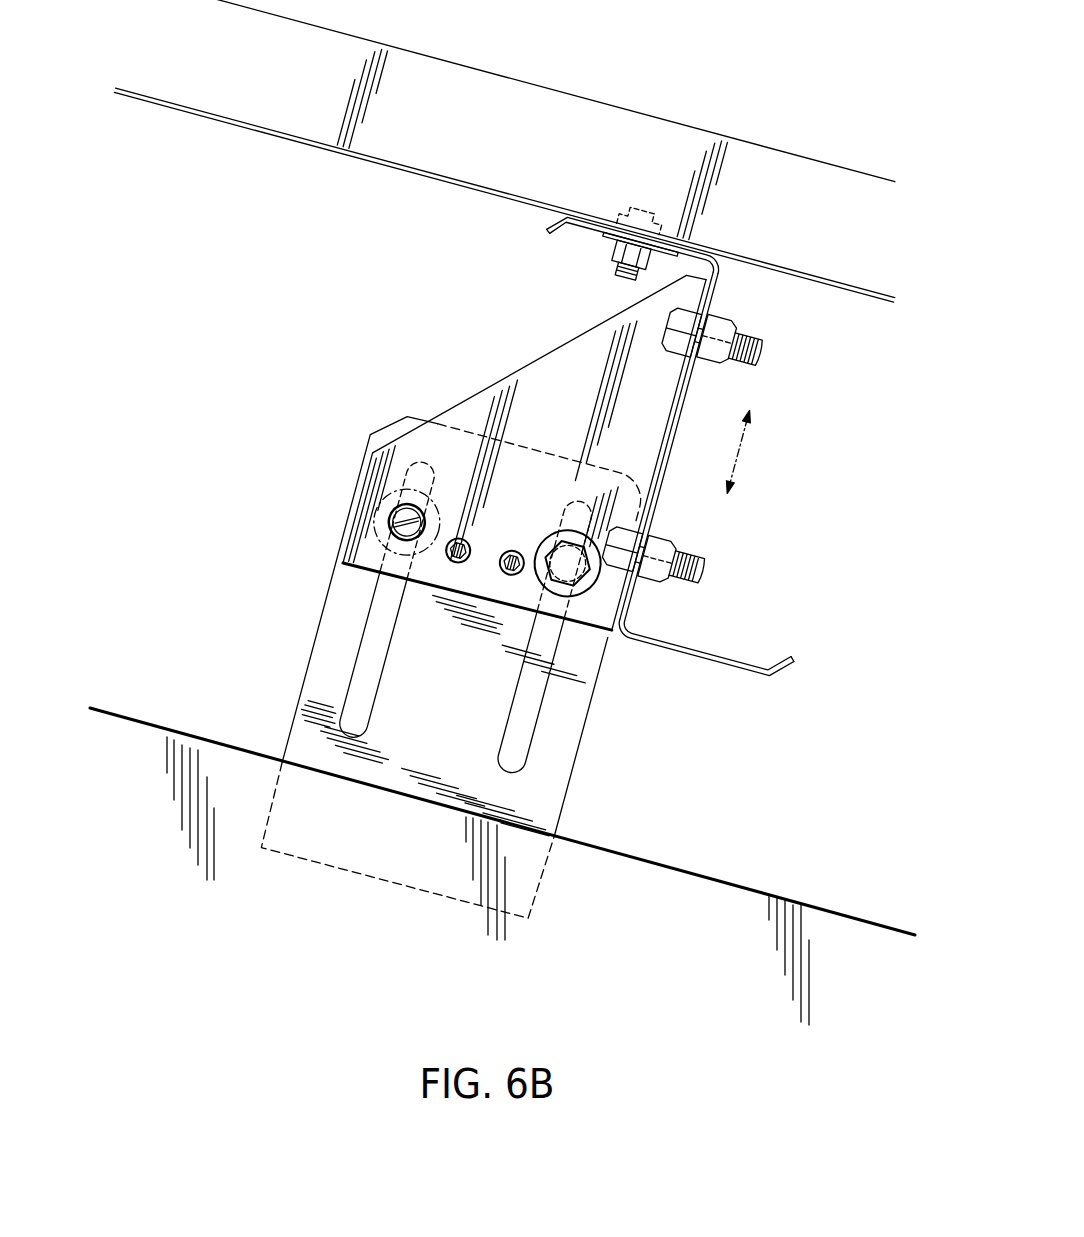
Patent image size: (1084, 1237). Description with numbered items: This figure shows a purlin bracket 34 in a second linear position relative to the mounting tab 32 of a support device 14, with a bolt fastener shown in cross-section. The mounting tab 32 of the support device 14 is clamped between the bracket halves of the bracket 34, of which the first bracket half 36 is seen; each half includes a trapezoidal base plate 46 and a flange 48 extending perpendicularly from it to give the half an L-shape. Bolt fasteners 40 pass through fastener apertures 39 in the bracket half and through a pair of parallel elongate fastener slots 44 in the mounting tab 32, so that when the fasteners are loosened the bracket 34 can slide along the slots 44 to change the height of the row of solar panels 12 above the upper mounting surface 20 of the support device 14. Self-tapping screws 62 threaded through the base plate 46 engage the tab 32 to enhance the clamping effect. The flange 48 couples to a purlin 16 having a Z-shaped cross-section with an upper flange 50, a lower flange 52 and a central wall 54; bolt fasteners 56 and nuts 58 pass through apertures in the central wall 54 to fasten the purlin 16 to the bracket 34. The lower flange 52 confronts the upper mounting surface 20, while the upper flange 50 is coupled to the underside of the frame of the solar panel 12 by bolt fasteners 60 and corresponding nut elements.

The solar panel 12 is at (543, 89).
The support device 14 is at (708, 875).
The purlin 16 is at (705, 666).
The upper mounting surface 20 is at (135, 722).
The mounting tab 32 is at (319, 625).
The purlin bracket 34 is at (507, 362).
The first bracket half 36 is at (470, 400).
The fastener aperture 39 is at (388, 512).
The bolt fastener 40 is at (402, 525).
The fastener slot 44 is at (577, 507).
The base plate 46 is at (540, 429).
The flange 48 is at (660, 448).
The upper flange 50 is at (590, 229).
The lower flange 52 is at (700, 663).
The central wall 54 is at (676, 450).
The bolt fastener 56 is at (693, 307).
The nut 58 is at (703, 367).
The bolt fastener 60 is at (643, 207).
The self-tapping screw 62 is at (455, 562).